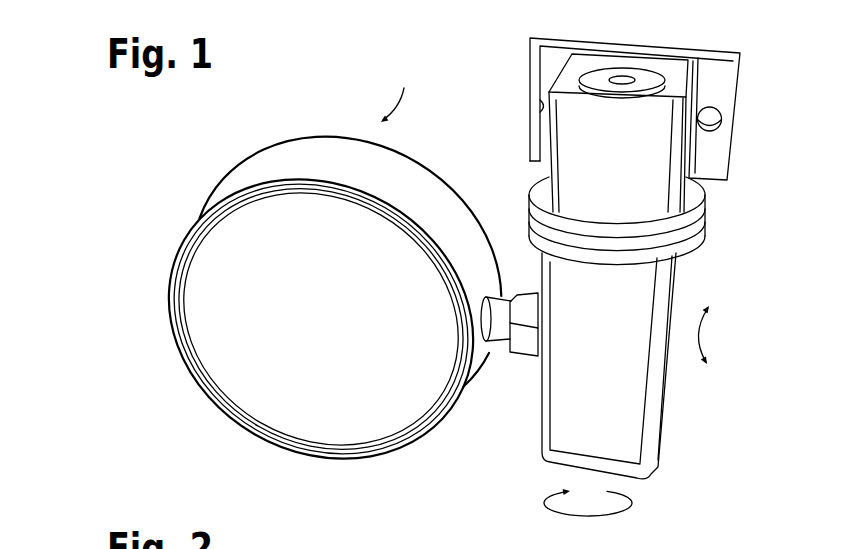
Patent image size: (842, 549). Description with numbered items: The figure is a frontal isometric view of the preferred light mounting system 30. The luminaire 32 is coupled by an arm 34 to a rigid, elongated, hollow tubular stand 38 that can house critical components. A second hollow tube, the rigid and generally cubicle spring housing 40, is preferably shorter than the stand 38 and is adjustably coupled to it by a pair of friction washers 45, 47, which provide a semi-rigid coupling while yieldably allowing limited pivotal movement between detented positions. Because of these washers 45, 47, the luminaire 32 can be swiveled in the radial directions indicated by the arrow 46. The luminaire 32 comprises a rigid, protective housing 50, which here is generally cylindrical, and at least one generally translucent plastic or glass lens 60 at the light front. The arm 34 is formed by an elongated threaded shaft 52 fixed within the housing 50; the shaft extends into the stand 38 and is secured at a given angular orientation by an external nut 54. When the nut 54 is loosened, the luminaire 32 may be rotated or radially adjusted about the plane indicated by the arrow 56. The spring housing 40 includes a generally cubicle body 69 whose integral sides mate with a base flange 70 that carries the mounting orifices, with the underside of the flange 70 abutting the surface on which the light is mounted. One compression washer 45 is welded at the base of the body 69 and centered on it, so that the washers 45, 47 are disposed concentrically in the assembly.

The light mounting system 30 is at (412, 103).
The luminaire 32 is at (321, 319).
The arm 34 is at (517, 362).
The stand 38 is at (695, 263).
The spring housing 40 is at (633, 104).
The friction washer 45 is at (650, 226).
The arrow 46 is at (563, 517).
The friction washer 47 is at (697, 244).
The housing 50 is at (228, 413).
The threaded shaft 52 is at (497, 328).
The external nut 54 is at (528, 296).
The arrow 56 is at (704, 362).
The lens 60 is at (337, 437).
The body 69 is at (560, 130).
The base flange 70 is at (740, 120).